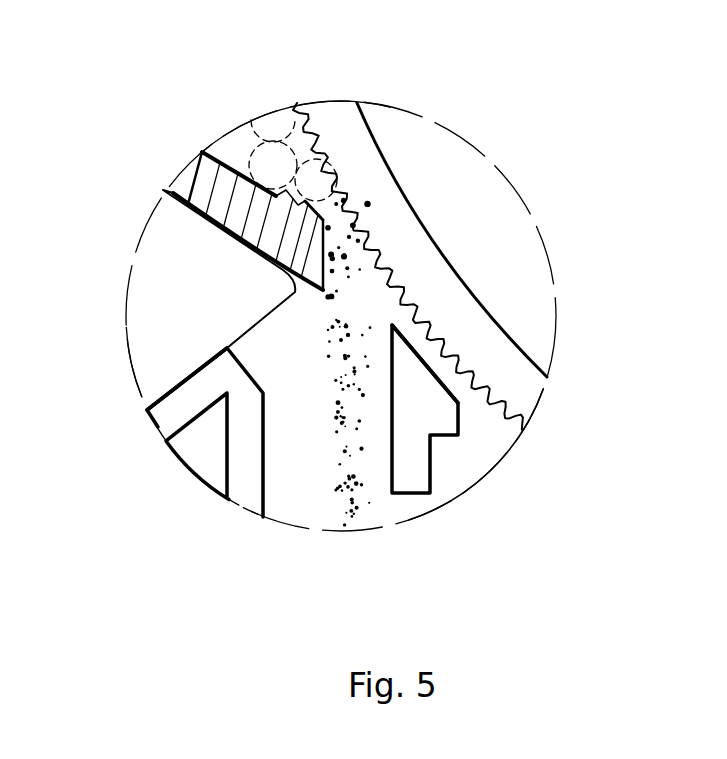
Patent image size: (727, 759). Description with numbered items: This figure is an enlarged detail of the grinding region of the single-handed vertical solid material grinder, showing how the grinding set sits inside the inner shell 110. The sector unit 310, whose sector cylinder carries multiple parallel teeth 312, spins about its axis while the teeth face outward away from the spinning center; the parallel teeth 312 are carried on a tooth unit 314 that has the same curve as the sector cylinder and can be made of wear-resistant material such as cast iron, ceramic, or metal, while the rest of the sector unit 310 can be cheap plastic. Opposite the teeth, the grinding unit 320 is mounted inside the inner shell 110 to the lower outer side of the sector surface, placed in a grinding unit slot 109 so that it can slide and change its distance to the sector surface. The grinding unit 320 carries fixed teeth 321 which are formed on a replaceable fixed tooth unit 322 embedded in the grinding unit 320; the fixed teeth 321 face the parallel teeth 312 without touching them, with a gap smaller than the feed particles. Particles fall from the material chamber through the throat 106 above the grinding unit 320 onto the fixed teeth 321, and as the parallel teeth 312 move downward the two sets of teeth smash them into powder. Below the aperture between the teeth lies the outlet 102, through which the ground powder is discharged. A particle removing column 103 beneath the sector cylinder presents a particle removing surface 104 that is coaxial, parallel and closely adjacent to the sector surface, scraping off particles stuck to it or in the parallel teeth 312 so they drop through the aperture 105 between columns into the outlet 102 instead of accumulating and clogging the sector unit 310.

The outlet 102 is at (259, 393).
The particle removing column 103 is at (507, 431).
The particle removing surface 104 is at (437, 380).
The aperture 105 is at (491, 488).
The throat 106 is at (223, 136).
The grinding unit slot 109 is at (175, 388).
The inner shell 110 is at (169, 455).
The sector unit 310 is at (503, 283).
The parallel teeth 312 is at (408, 250).
The tooth unit 314 is at (590, 165).
The grinding unit 320 is at (182, 255).
The fixed teeth 321 is at (298, 205).
The fixed tooth unit 322 is at (188, 167).